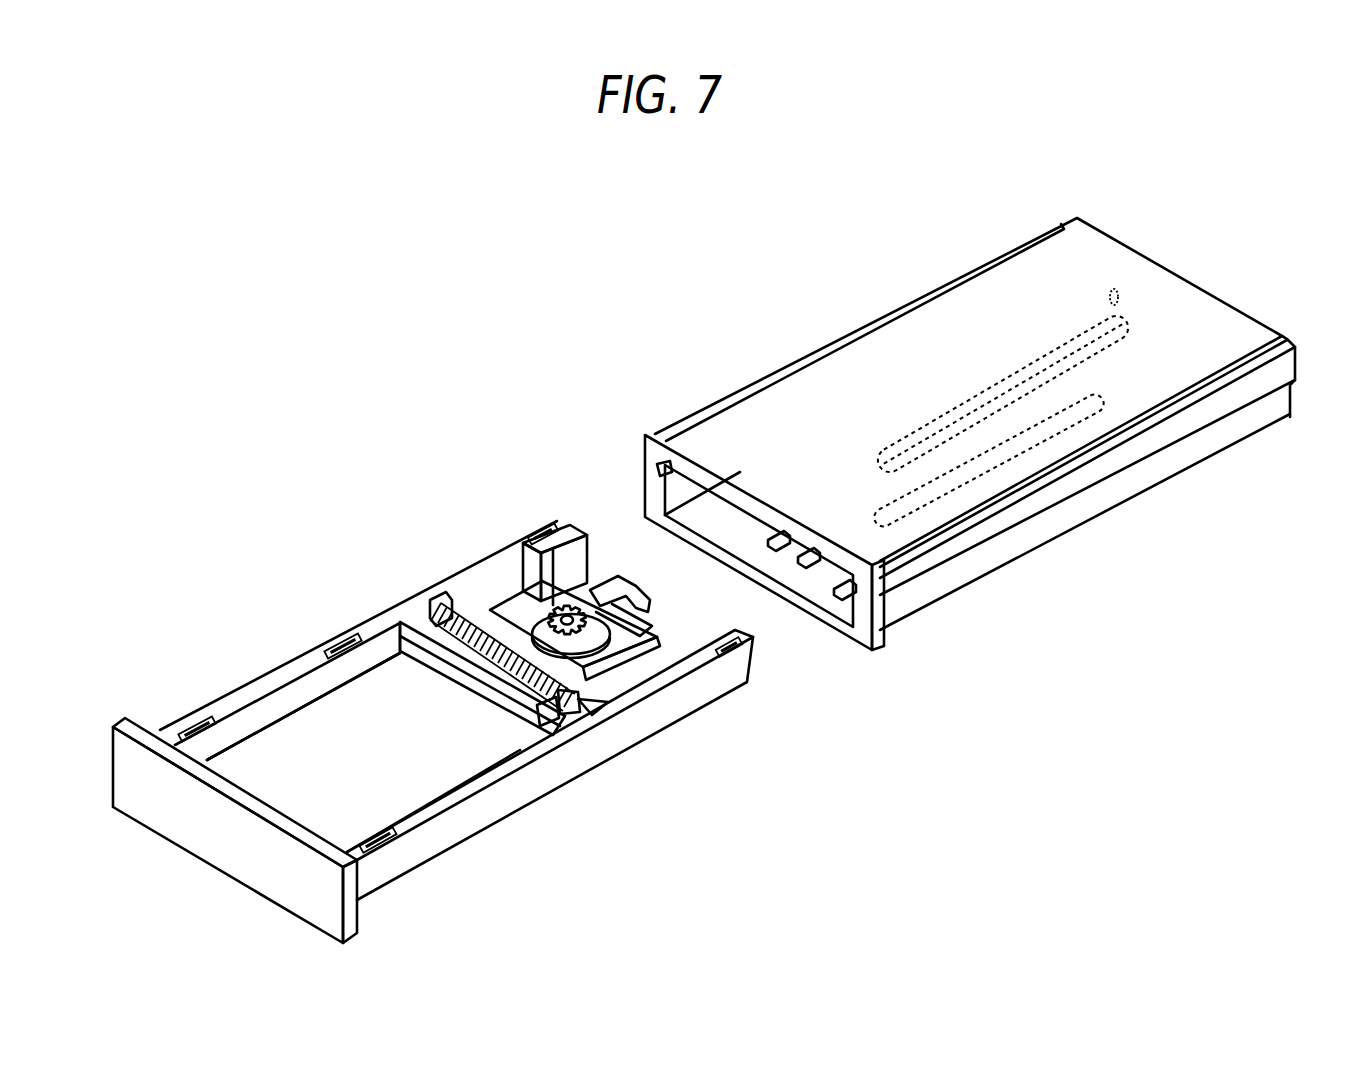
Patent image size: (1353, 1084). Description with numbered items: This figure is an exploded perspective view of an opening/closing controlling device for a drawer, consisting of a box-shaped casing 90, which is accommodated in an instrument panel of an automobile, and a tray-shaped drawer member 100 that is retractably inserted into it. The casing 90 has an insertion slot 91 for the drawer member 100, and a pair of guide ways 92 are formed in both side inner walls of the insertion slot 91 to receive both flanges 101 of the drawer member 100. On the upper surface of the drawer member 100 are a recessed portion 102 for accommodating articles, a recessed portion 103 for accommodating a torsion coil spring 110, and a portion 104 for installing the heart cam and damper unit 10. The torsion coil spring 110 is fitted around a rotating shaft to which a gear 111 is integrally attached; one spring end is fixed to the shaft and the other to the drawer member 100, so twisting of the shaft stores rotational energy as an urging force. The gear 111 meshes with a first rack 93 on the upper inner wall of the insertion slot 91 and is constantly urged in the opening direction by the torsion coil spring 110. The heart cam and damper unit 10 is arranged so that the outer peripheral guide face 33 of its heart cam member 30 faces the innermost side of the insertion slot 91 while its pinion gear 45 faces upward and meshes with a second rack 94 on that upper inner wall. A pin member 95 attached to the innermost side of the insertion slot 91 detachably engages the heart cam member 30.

The heart cam and damper unit 10 is at (567, 632).
The heart cam member 30 is at (660, 614).
The outer peripheral guide face 33 is at (752, 532).
The pinion gear 45 is at (570, 606).
The casing 90 is at (878, 358).
The insertion slot 91 is at (807, 582).
The guide ways 92 is at (650, 432).
The first rack 93 is at (1058, 432).
The second rack 94 is at (1035, 368).
The pin member 95 is at (1113, 288).
The drawer member 100 is at (352, 623).
The flanges 101 is at (458, 610).
The recessed portion 102 is at (300, 732).
The recessed portion 103 is at (457, 572).
The portion for installing the heart cam and damper unit 104 is at (527, 603).
The torsion coil spring 110 is at (455, 603).
The gear 111 is at (573, 712).